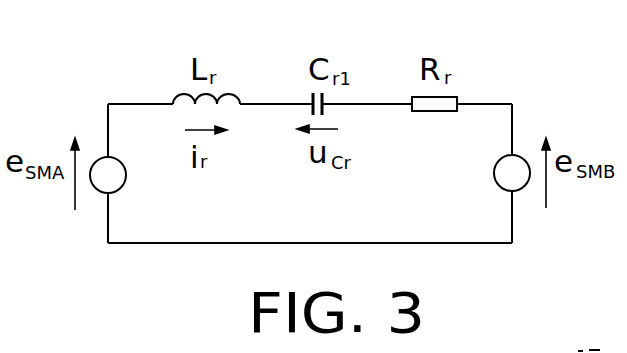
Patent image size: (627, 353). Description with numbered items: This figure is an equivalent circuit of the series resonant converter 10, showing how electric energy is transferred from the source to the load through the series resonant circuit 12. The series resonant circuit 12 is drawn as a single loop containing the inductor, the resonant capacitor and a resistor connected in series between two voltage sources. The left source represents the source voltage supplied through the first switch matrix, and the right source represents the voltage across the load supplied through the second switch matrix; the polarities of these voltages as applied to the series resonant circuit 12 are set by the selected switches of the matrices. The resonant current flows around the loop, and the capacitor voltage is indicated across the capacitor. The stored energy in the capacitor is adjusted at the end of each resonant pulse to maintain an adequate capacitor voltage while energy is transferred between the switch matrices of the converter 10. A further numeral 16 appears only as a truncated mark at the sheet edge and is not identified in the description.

The series resonant converter 10 is at (480, 58).
The series resonant circuit 12 is at (360, 51).
The truncated numeral at sheet edge 16 is at (591, 350).